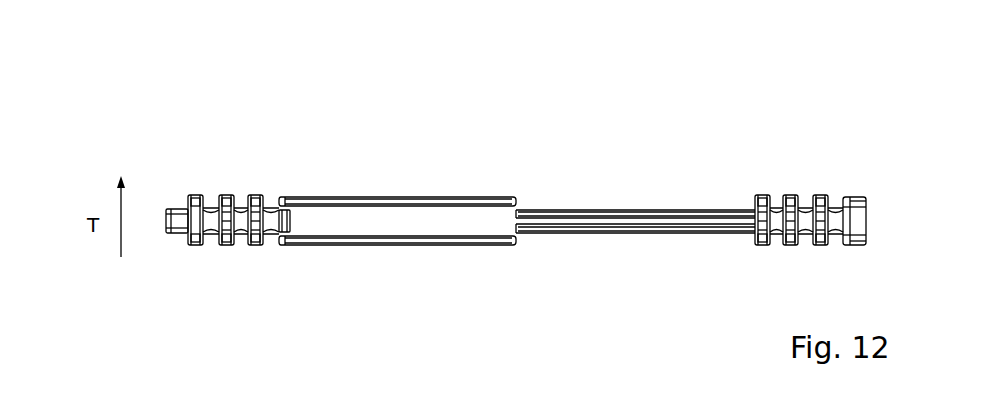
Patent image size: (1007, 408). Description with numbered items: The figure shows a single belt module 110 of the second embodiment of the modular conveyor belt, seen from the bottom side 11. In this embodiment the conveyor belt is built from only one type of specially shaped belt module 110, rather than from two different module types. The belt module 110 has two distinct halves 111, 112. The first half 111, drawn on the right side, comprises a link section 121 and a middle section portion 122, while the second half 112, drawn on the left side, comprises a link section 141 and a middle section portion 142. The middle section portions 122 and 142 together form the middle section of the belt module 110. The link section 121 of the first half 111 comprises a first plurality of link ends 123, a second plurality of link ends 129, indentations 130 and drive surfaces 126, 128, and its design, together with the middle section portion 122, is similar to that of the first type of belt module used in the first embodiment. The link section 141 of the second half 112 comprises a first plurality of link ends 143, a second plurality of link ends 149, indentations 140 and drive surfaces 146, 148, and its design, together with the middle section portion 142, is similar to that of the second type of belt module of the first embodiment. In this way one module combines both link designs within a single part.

The belt module 110 is at (126, 137).
The bottom side 11 is at (485, 220).
The first half 111 is at (640, 285).
The second half 112 is at (349, 285).
The link section 121 is at (795, 170).
The middle section portion 122 is at (630, 180).
The first plurality of link ends 123 is at (820, 197).
The drive surface 126 is at (762, 222).
The drive surface 128 is at (763, 224).
The second plurality of link ends 129 is at (823, 248).
The indentations 130 is at (788, 222).
The indentations 140 is at (224, 220).
The link section 141 is at (248, 170).
The middle section portion 142 is at (408, 180).
The first plurality of link ends 143 is at (258, 197).
The drive surface 146 is at (225, 215).
The drive surface 148 is at (225, 224).
The second plurality of link ends 149 is at (256, 243).